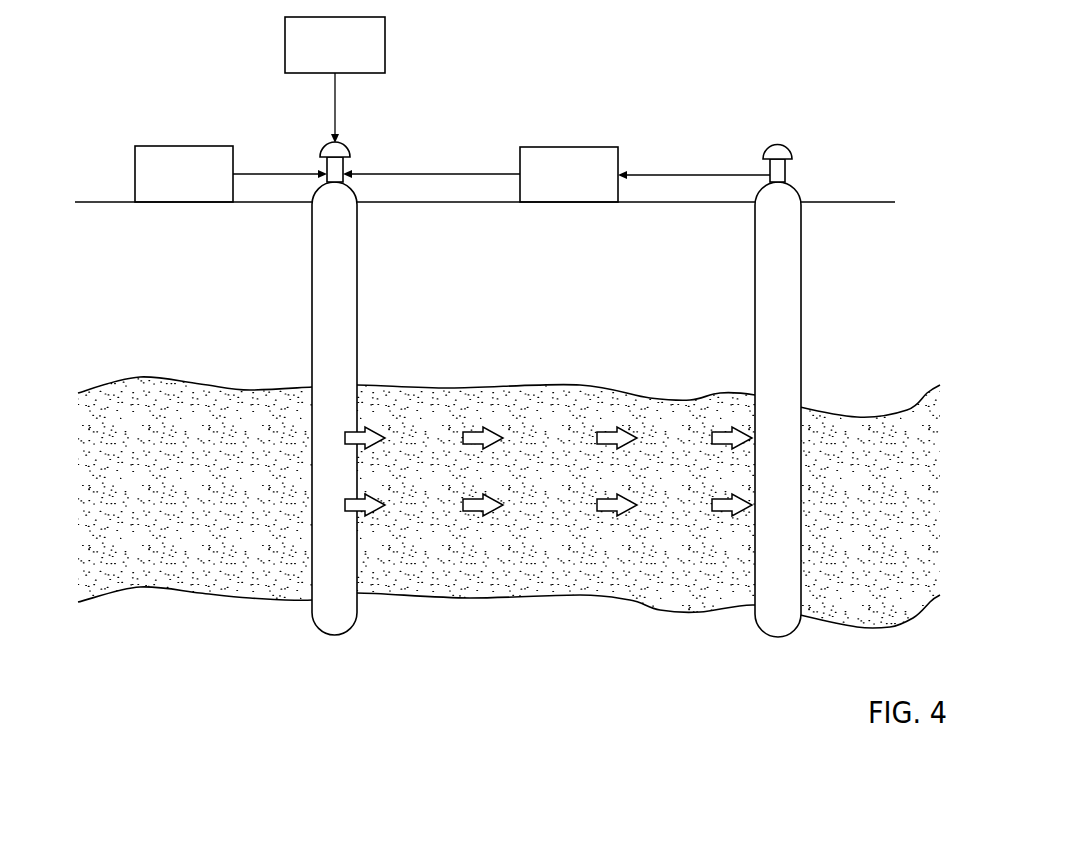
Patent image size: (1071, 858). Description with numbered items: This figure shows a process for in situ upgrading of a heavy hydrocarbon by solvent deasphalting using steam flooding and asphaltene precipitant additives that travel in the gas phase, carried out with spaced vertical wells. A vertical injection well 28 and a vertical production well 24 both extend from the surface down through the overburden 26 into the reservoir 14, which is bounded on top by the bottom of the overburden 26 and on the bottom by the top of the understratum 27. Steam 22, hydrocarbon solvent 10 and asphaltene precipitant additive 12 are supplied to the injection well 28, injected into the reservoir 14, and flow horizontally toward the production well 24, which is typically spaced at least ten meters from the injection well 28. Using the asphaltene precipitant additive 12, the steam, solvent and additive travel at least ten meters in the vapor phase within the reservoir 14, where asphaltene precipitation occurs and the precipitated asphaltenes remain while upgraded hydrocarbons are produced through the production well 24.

The hydrocarbon solvent 10 is at (560, 185).
The asphaltene precipitant additive 12 is at (324, 55).
The reservoir 14 is at (93, 530).
The steam 22 is at (172, 185).
The production well 24 is at (788, 303).
The overburden 26 is at (90, 318).
The understratum 27 is at (213, 626).
The injection well 28 is at (327, 301).